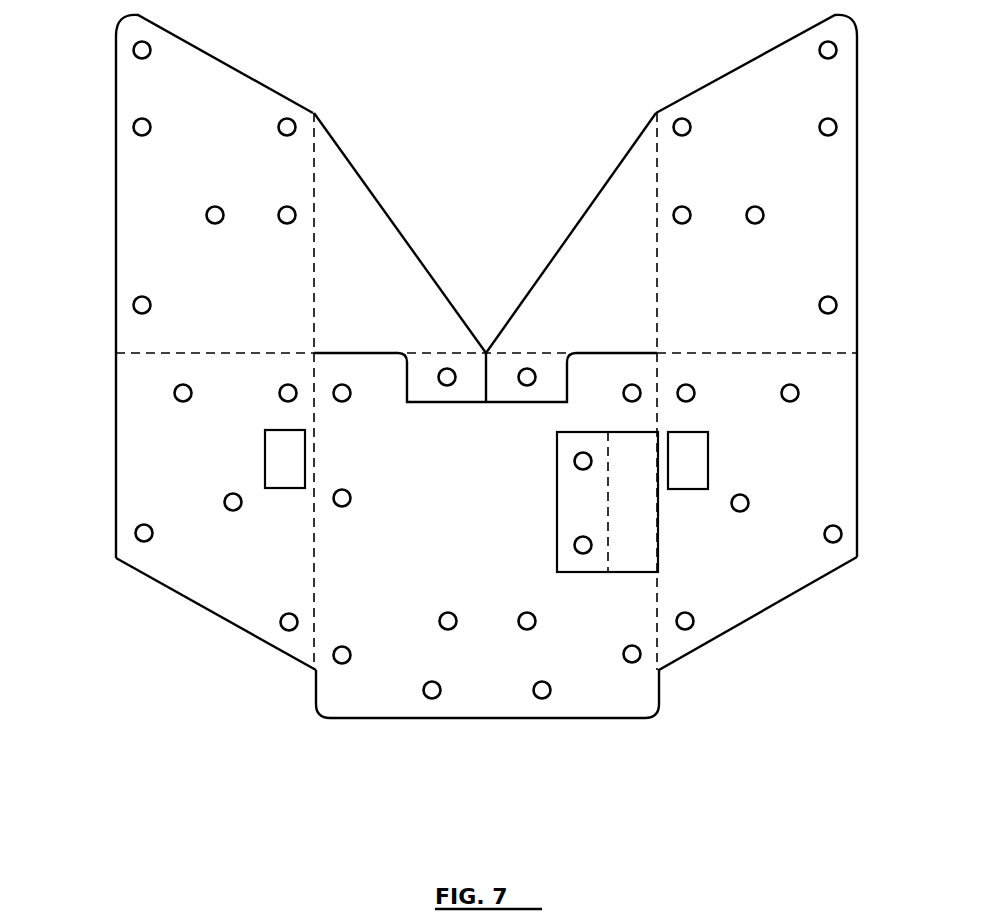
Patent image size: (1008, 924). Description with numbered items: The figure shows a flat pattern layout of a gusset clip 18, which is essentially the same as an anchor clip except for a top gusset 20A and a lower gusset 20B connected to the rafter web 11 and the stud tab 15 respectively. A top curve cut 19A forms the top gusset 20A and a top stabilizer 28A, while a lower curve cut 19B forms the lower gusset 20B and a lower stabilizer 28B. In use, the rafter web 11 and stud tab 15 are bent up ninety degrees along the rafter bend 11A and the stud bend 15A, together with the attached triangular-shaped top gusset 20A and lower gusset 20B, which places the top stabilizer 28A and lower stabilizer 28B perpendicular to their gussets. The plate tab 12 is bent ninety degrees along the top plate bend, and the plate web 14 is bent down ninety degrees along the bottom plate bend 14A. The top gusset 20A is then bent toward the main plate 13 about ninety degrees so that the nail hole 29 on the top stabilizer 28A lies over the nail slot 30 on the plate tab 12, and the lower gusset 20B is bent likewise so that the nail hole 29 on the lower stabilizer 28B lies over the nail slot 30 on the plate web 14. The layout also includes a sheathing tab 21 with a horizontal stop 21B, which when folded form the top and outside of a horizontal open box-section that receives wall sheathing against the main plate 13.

The rafter web 11 is at (748, 87).
The rafter bend 11A is at (827, 352).
The plate tab 12 is at (747, 600).
The main plate 13 is at (355, 697).
The plate web 14 is at (233, 582).
The bottom plate bend 14A is at (313, 637).
The stud tab 15 is at (198, 82).
The stud bend 15A is at (143, 353).
The gusset clip 18 is at (583, 695).
The top curve cut 19A is at (610, 357).
The lower curve cut 19B is at (358, 357).
The top gusset 20A is at (618, 213).
The lower gusset 20B is at (333, 200).
The sheathing tab 21 is at (580, 566).
The horizontal stop 21B is at (635, 562).
The top stabilizer 28A is at (543, 360).
The lower stabilizer 28B is at (420, 363).
The nail hole 29 is at (447, 372).
The nail slot 30 is at (265, 458).